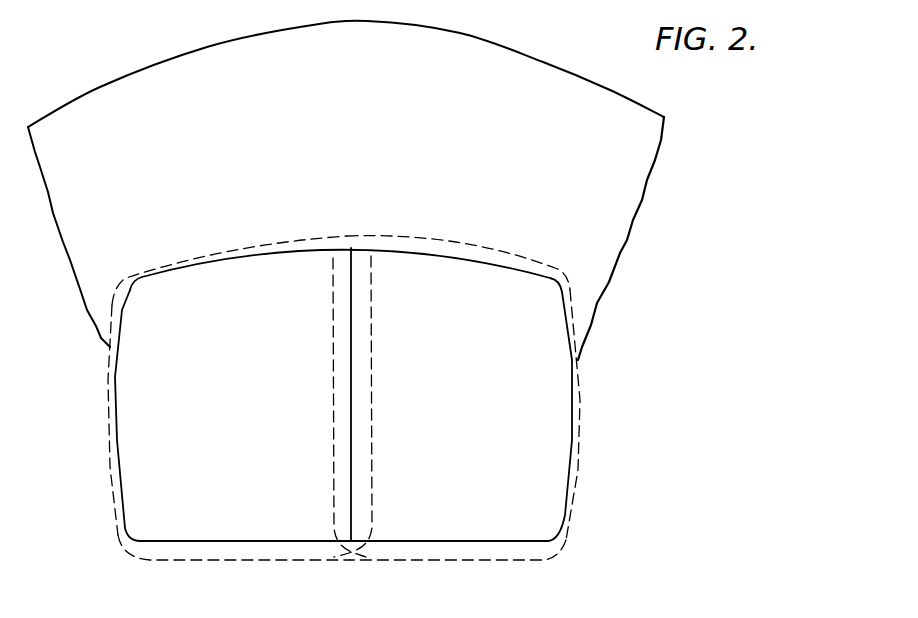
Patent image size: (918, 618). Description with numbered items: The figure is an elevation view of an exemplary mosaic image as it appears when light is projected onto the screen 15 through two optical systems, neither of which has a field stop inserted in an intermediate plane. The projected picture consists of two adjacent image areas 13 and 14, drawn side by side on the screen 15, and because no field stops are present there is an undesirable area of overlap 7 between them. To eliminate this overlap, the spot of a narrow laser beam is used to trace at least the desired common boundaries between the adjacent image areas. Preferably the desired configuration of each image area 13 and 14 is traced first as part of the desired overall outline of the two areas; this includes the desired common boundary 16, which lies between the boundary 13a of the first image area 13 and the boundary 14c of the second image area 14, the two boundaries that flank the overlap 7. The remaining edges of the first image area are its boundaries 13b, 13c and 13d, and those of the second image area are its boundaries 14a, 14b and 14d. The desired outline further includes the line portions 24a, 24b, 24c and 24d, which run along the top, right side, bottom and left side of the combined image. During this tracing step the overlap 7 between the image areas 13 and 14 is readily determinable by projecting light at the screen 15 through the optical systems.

The area of overlap 7 is at (358, 406).
The image area 13 is at (245, 393).
The boundary of image area 13a is at (373, 367).
The boundary of image area 13b is at (276, 235).
The boundary of image area 13c is at (108, 370).
The boundary of image area 13d is at (217, 567).
The image area 14 is at (468, 402).
The boundary of image area 14a is at (582, 420).
The boundary of image area 14b is at (480, 245).
The boundary of image area 14c is at (332, 395).
The boundary of image area 14d is at (495, 563).
The screen 15 is at (359, 78).
The desired common boundary 16 is at (349, 268).
The line portion 24a is at (301, 250).
The line portion 24b is at (572, 388).
The line portion 24c is at (385, 541).
The line portion 24d is at (115, 400).